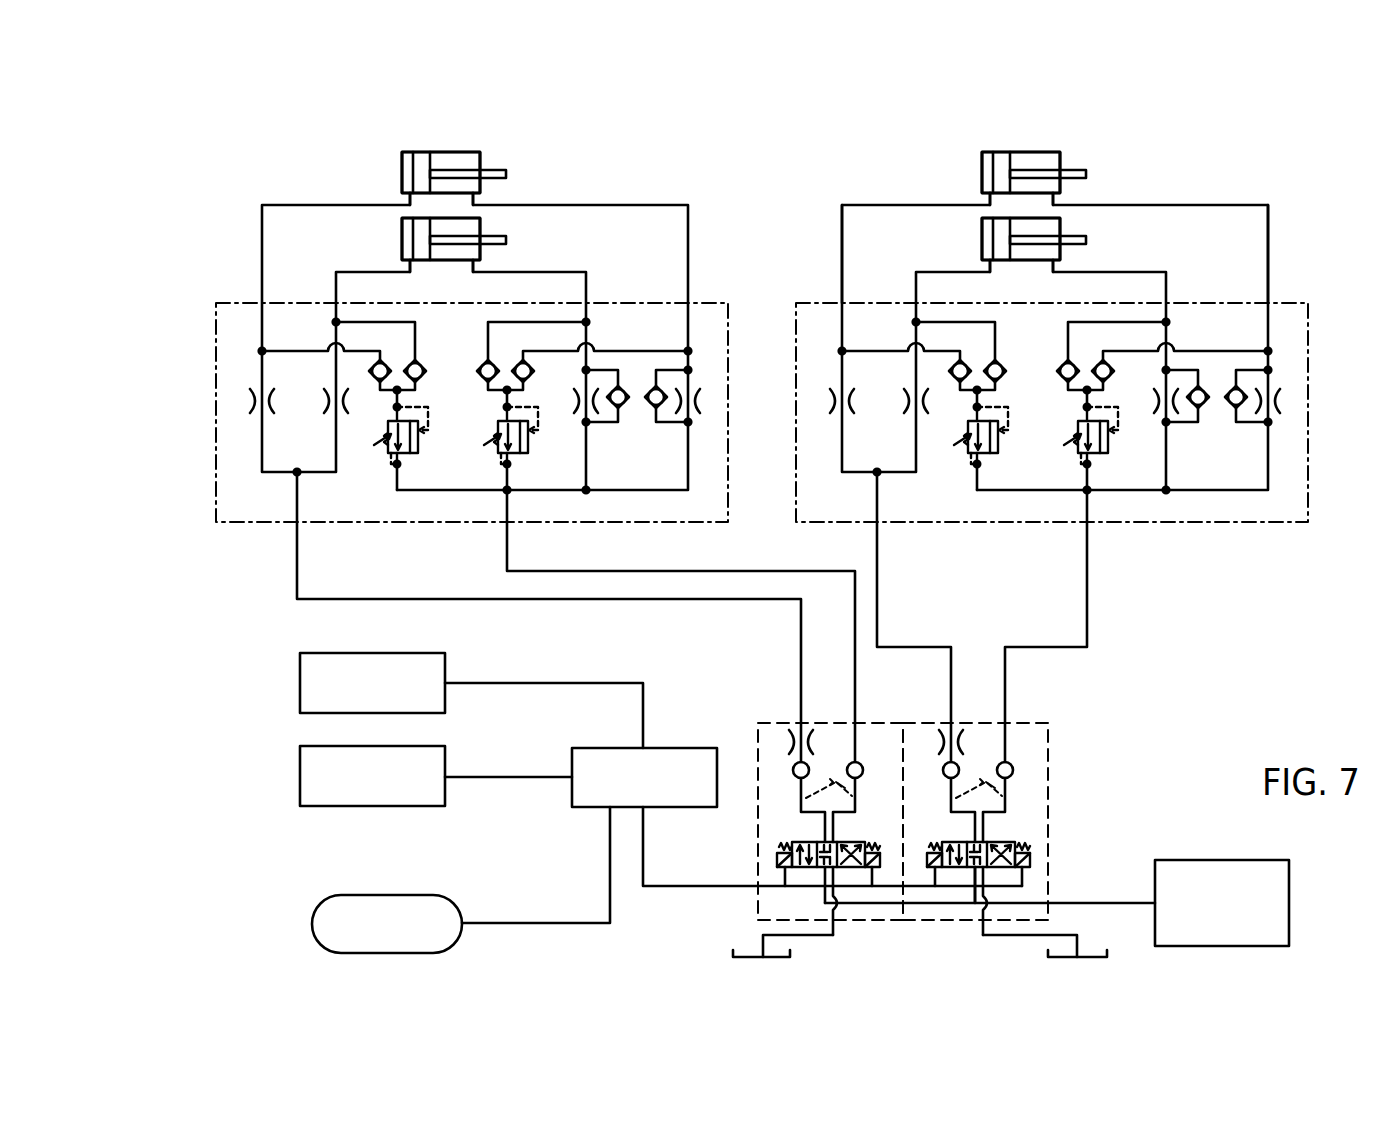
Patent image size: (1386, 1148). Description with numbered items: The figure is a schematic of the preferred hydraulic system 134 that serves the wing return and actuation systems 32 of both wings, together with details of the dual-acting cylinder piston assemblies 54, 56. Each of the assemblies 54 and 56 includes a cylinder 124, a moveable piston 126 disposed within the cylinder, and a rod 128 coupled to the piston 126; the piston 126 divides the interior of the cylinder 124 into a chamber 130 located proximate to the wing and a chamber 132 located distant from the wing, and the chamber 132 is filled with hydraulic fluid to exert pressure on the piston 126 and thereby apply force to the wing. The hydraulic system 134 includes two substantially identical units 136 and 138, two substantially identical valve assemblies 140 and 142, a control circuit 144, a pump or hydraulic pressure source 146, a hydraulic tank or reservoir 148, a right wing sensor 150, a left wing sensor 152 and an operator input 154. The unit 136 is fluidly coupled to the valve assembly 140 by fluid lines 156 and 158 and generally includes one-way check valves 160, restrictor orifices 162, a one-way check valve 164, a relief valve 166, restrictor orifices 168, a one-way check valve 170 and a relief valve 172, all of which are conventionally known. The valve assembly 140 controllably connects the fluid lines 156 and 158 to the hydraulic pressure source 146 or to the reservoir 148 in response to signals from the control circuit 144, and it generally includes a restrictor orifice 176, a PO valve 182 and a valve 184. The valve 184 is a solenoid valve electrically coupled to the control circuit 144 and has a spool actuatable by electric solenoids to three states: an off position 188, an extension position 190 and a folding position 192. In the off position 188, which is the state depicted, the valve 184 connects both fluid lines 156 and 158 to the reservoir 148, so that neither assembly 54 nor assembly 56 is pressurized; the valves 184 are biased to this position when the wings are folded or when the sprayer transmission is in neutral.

The wing return and actuation system 32 is at (362, 165).
The cylinder piston assembly 54 is at (466, 151).
The cylinder piston assembly 56 is at (490, 232).
The cylinder 124 is at (483, 160).
The piston 126 is at (418, 151).
The rod 128 is at (505, 178).
The chamber 130 is at (436, 151).
The chamber 132 is at (403, 181).
The hydraulic system 134 is at (1290, 276).
The unit 136 is at (1232, 522).
The unit 138 is at (722, 304).
The valve assembly 140 is at (1048, 757).
The valve assembly 142 is at (760, 723).
The control circuit 144 is at (572, 763).
The hydraulic pressure source 146 is at (1292, 900).
The hydraulic tank 148 is at (748, 953).
The right wing sensor 150 is at (447, 668).
The left wing sensor 152 is at (445, 792).
The operator input 154 is at (462, 898).
The fluid line 156 is at (682, 571).
The fluid line 158 is at (397, 597).
The one-way check valve 160 is at (653, 390).
The restrictor orifice 162 is at (576, 400).
The one-way check valve 164 is at (519, 364).
The relief valve 166 is at (522, 455).
The restrictor orifice 168 is at (255, 401).
The one-way check valve 170 is at (396, 355).
The relief valve 172 is at (412, 455).
The restrictor orifice 176 is at (808, 740).
The PO valve 182 is at (850, 788).
The valve 184 is at (782, 852).
The off position 188 is at (838, 870).
The extension position 190 is at (812, 840).
The folding position 192 is at (848, 842).